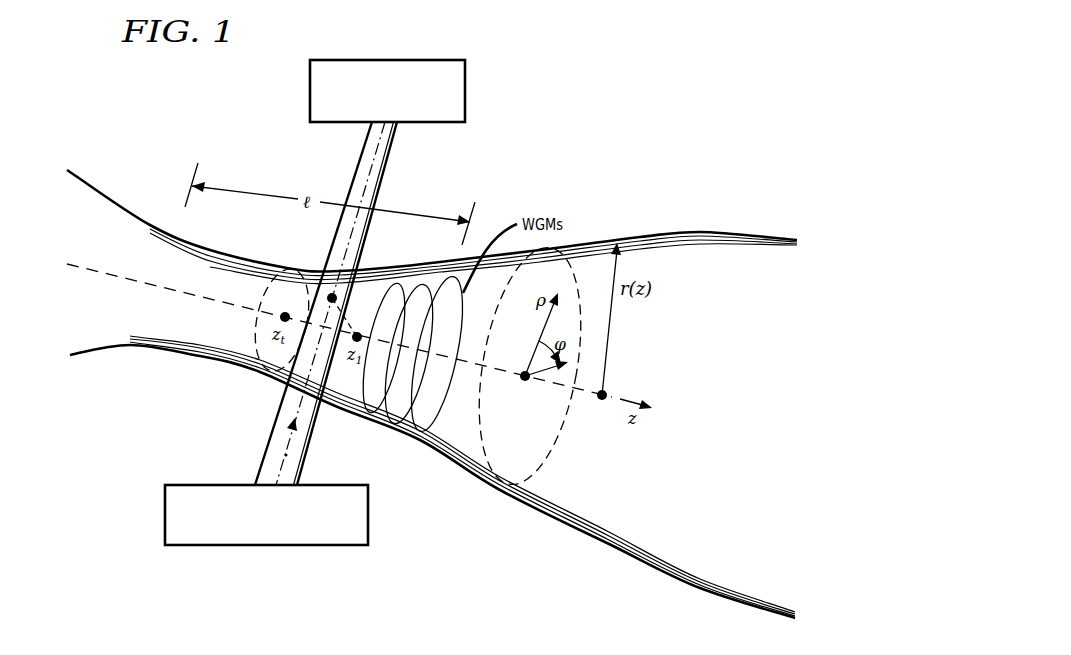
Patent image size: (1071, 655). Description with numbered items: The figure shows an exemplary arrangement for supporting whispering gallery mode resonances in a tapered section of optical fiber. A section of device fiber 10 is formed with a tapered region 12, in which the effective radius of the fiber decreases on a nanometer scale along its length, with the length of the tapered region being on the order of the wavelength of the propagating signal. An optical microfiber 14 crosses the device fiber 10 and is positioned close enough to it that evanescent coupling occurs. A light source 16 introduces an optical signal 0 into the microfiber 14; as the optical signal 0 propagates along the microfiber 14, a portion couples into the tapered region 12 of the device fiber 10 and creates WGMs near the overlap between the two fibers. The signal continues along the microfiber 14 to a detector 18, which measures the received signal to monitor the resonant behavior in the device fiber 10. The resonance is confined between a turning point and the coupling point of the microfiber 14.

The device fiber 10 is at (650, 233).
The tapered region 12 is at (245, 261).
The optical microfiber 14 is at (368, 186).
The light source 16 is at (369, 515).
The detector 18 is at (466, 92).
The origin of probe fiber axis 0 is at (286, 455).